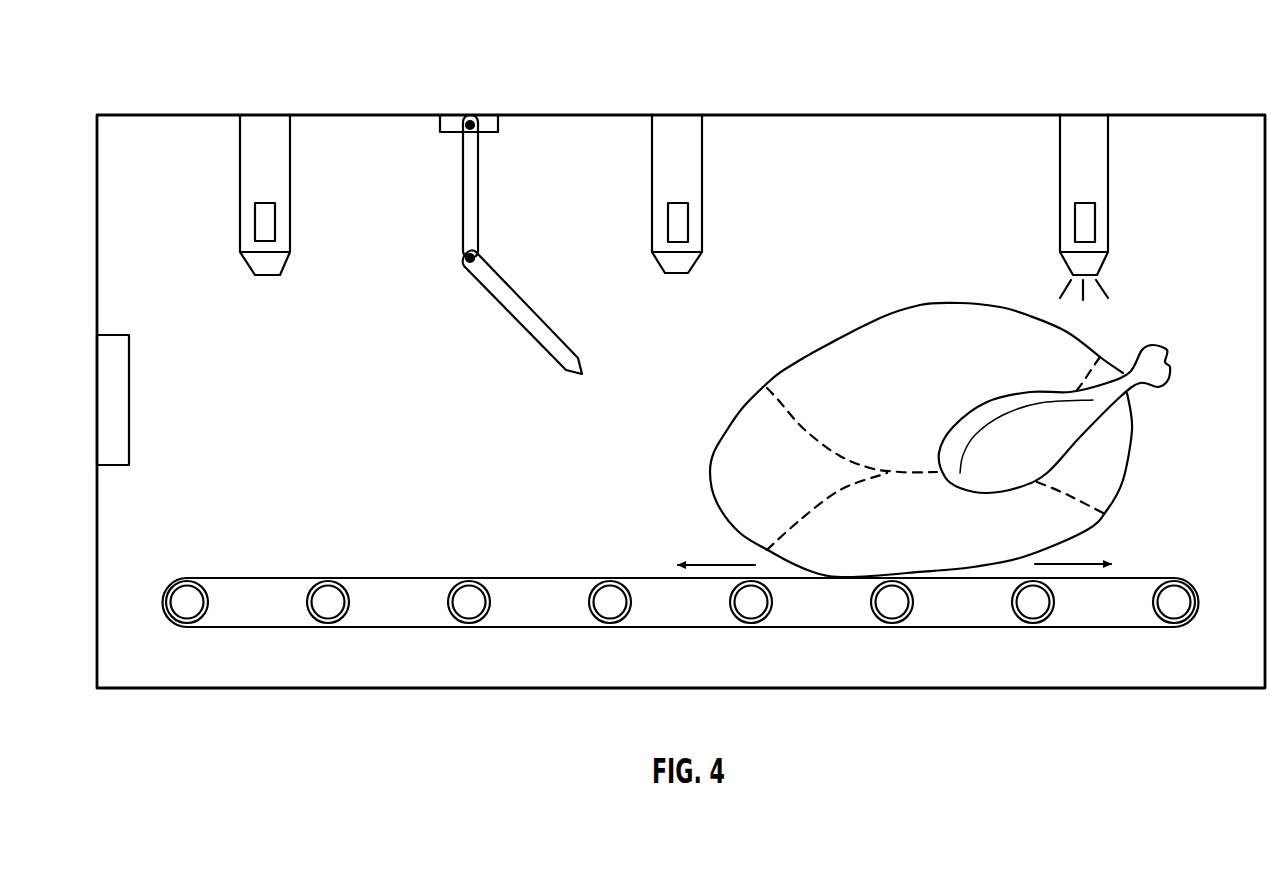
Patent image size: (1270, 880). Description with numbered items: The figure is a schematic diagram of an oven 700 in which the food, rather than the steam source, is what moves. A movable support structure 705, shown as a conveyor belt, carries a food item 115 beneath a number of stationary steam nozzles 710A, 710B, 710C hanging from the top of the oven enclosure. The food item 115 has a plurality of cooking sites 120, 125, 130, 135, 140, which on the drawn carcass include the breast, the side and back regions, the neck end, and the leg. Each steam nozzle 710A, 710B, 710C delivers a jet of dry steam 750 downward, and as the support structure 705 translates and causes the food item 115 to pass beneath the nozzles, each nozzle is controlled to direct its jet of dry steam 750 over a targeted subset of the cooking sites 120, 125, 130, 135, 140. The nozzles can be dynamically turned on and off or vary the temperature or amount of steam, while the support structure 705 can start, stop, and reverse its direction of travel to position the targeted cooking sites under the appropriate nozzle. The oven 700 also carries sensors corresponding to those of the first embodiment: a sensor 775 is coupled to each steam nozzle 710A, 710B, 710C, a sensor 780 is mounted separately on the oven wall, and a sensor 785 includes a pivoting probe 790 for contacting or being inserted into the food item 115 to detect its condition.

The oven 700 is at (181, 52).
The movable support structure 705 is at (273, 570).
The steam nozzle 710A is at (1108, 178).
The steam nozzle 710B is at (702, 176).
The steam nozzle 710C is at (290, 176).
The sensor 775 is at (258, 210).
The jet of dry steam 750 is at (1108, 290).
The sensor 780 is at (120, 418).
The sensor 785 is at (456, 110).
The probe 790 is at (518, 321).
The food item 115 is at (924, 415).
The cooking site 120 is at (952, 315).
The cooking site 125 is at (1120, 453).
The cooking site 130 is at (1083, 517).
The cooking site 135 is at (716, 465).
The cooking site 140 is at (960, 435).